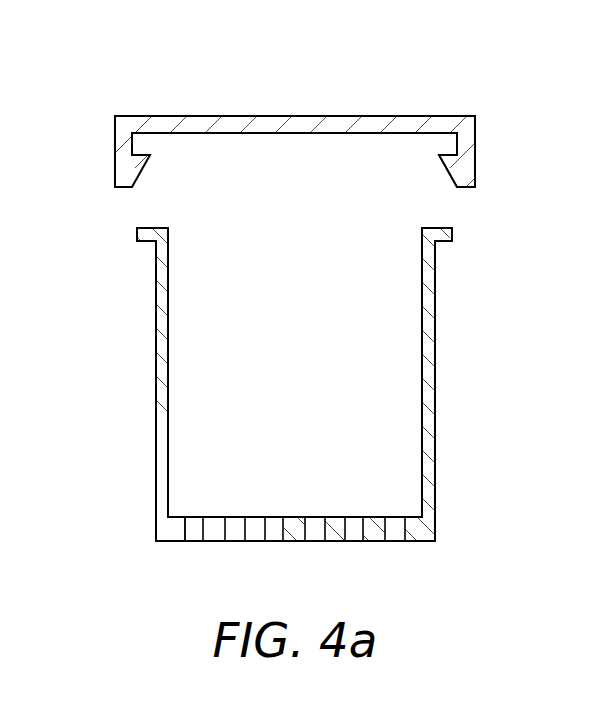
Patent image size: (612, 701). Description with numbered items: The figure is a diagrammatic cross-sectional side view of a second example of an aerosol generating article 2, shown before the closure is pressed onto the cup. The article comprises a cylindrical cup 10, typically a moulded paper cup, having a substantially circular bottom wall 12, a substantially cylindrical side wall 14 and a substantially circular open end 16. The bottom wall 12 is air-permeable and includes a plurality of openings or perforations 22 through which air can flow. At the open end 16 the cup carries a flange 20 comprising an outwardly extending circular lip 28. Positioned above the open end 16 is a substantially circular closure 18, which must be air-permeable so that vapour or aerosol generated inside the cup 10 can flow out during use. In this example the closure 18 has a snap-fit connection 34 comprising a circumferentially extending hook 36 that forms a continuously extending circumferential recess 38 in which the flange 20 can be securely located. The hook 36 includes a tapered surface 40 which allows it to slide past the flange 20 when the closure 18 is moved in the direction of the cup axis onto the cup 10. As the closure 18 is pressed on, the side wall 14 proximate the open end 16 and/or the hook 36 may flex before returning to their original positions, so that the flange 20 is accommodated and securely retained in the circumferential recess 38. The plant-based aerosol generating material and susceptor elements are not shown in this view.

The aerosol generating article 2 is at (318, 118).
The cylindrical cup 10 is at (296, 347).
The bottom wall 12 is at (340, 542).
The side wall 14 is at (428, 372).
The open end 16 is at (239, 228).
The closure 18 is at (296, 118).
The flange 20 is at (143, 228).
The openings or perforations 22 is at (197, 542).
The circular lip 28 is at (437, 234).
The snap-fit connection 34 is at (422, 165).
The hook 36 is at (468, 161).
The circumferential recess 38 is at (441, 148).
The tapered surface 40 is at (445, 178).